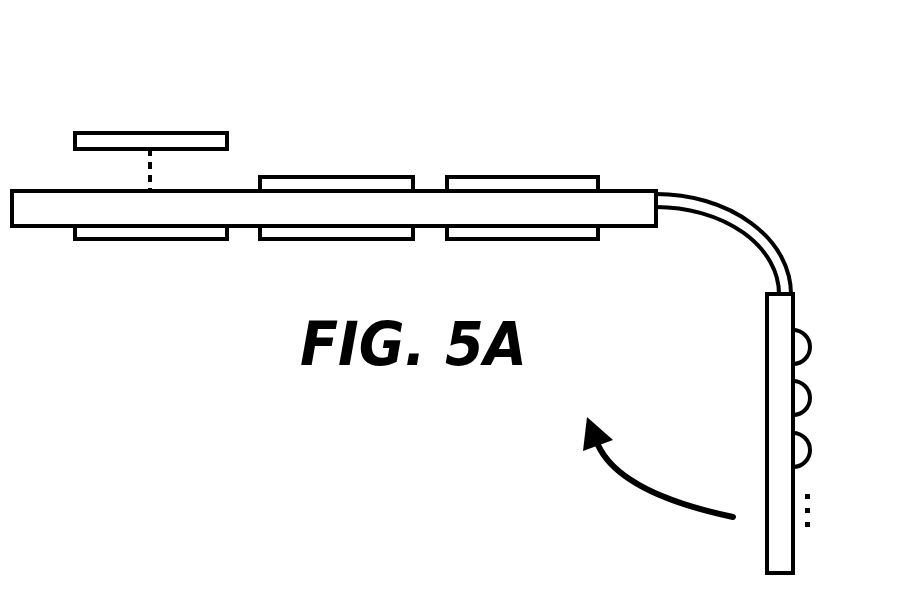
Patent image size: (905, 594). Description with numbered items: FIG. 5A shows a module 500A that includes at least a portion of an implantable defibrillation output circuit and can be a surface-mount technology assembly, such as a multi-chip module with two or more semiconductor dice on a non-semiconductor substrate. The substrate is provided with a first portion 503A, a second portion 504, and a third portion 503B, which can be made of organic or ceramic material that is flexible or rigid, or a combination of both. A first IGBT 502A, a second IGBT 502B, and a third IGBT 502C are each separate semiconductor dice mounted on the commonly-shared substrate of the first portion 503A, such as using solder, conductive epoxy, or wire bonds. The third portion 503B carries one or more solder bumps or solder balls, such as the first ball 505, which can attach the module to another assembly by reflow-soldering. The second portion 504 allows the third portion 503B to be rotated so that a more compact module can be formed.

The module 500A is at (584, 65).
The first IGBT 502A is at (150, 133).
The second IGBT 502B is at (337, 177).
The third IGBT 502C is at (122, 238).
The first portion 503A is at (627, 191).
The third portion 503B is at (767, 353).
The second portion 504 is at (716, 216).
The first ball 505 is at (803, 329).